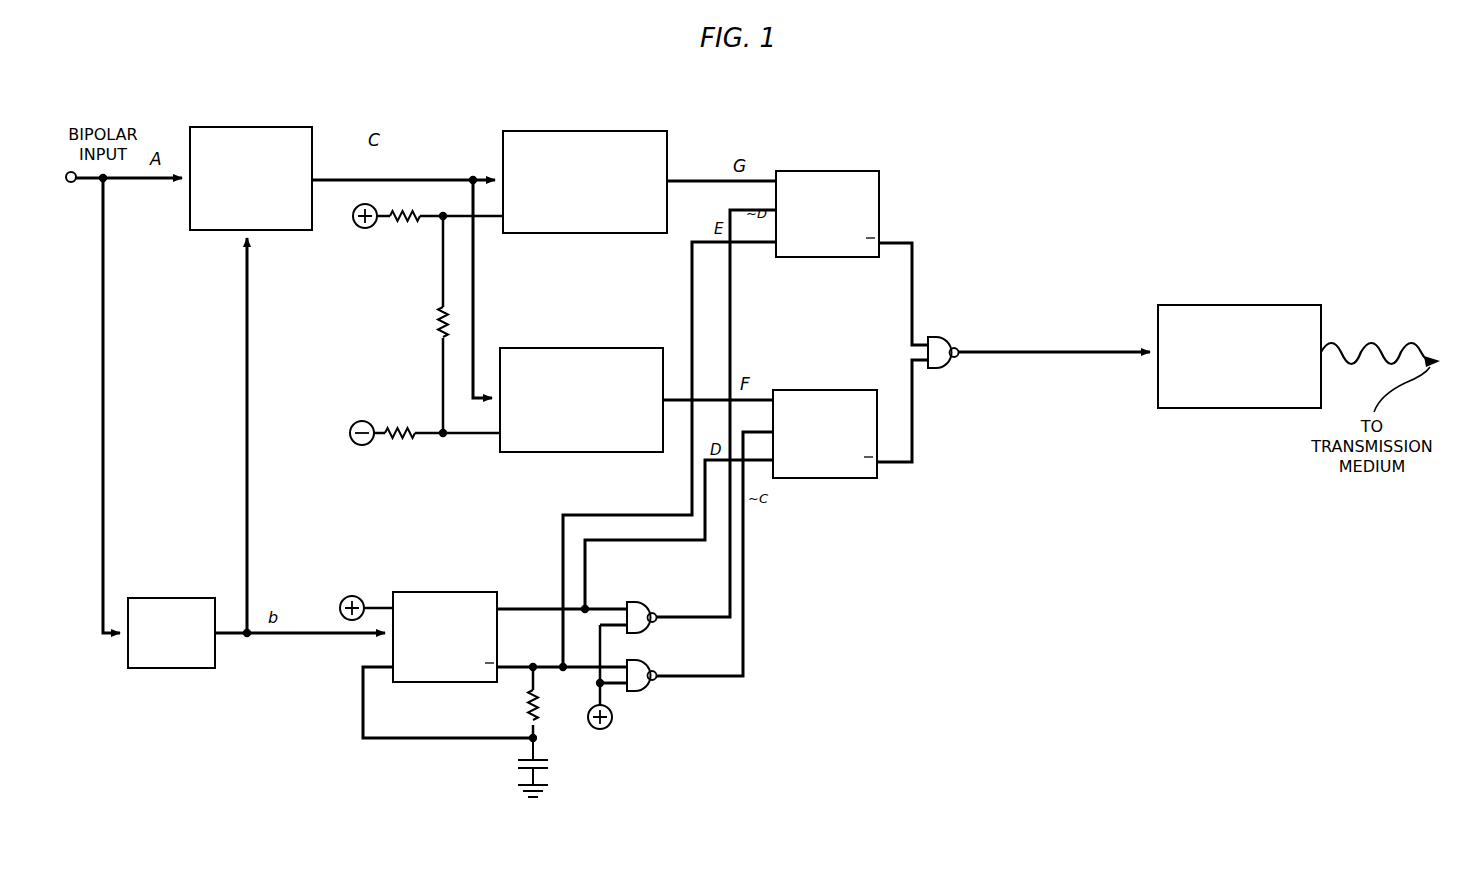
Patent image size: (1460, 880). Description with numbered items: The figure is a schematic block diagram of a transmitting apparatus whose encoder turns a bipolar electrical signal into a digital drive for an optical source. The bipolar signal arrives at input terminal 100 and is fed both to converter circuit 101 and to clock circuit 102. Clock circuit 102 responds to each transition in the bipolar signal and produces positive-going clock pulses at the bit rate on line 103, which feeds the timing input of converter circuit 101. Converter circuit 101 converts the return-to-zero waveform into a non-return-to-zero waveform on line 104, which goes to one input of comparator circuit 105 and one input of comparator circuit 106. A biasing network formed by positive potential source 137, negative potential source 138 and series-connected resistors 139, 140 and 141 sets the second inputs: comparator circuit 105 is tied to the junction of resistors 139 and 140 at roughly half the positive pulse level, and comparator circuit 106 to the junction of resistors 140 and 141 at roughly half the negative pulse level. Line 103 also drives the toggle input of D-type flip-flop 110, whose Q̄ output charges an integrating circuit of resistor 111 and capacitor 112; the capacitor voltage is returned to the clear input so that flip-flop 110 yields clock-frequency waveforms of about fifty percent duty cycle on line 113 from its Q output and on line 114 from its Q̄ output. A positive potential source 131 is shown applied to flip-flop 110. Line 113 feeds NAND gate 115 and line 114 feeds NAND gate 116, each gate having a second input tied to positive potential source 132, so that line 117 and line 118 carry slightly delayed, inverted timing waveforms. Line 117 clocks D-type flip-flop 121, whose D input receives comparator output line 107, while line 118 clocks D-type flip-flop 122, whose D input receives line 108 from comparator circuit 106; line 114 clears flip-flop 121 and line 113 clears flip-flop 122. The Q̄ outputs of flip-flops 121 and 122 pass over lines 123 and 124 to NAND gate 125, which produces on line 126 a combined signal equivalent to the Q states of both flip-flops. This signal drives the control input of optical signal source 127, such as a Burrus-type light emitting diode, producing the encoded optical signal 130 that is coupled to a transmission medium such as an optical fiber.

The input terminal 100 is at (68, 182).
The converter circuit 101 is at (255, 127).
The clock circuit 102 is at (172, 598).
The line 103 is at (249, 555).
The line 104 is at (342, 178).
The comparator circuit 105 is at (590, 131).
The comparator circuit 106 is at (592, 348).
The line 107 is at (688, 179).
The line 108 is at (682, 397).
The D-type flip-flop 110 is at (462, 590).
The resistor 111 is at (542, 712).
The capacitor 112 is at (549, 765).
The line 113 is at (536, 607).
The line 114 is at (528, 664).
The NAND gate 115 is at (639, 602).
The NAND gate 116 is at (639, 660).
The line 117 is at (690, 615).
The line 118 is at (688, 674).
The D-type flip-flop 121 is at (825, 171).
The D-type flip-flop 122 is at (822, 390).
The line 123 is at (912, 290).
The line 124 is at (912, 423).
The NAND gate 125 is at (940, 336).
The line 126 is at (1061, 349).
The optical signal source 127 is at (1221, 408).
The encoded optical signal 130 is at (1361, 350).
The positive voltage source 131 is at (352, 596).
The positive voltage source 132 is at (611, 722).
The positive potential source 137 is at (355, 226).
The negative potential source 138 is at (353, 424).
The resistor 139 is at (404, 226).
The resistor 140 is at (437, 324).
The resistor 141 is at (408, 422).